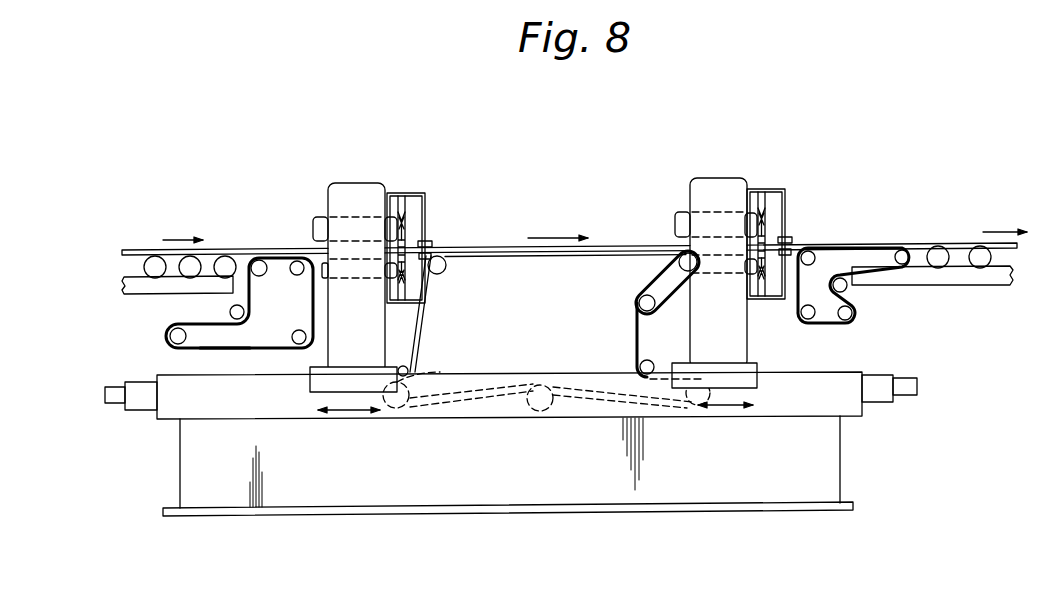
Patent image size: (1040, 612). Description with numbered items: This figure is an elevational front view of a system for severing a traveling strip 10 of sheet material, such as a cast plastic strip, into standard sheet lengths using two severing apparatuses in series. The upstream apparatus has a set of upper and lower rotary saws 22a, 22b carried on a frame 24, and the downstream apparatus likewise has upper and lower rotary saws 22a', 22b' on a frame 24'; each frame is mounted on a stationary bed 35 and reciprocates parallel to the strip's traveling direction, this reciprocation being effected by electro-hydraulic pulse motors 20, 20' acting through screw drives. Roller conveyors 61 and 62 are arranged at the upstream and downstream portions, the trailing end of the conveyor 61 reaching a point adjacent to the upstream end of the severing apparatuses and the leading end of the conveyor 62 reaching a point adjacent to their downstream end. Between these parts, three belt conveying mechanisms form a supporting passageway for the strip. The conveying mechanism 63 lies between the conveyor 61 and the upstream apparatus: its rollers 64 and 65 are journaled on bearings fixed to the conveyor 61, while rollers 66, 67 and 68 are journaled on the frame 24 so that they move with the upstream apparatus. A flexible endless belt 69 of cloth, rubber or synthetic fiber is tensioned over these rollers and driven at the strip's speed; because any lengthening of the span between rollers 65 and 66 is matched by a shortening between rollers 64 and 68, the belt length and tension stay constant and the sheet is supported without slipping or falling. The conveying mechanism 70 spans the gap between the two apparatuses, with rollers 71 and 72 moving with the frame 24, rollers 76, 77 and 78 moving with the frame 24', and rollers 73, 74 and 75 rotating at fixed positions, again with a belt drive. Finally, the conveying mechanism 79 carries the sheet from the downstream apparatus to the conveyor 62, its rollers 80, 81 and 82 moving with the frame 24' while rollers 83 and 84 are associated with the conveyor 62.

The strip 10 is at (133, 250).
The electro-hydraulic pulse motor 20 is at (483, 411).
The electro-hydraulic pulse motor 20' is at (889, 407).
The upper rotary saw 22a is at (434, 210).
The lower rotary saw 22b is at (442, 250).
The upper rotary saw 22a' is at (795, 209).
The lower rotary saw 22b' is at (805, 241).
The frame 24 is at (349, 259).
The frame 24' is at (718, 253).
The stationary bed 35 is at (507, 497).
The roller conveyor 61 is at (143, 292).
The roller conveyor 62 is at (997, 281).
The conveying mechanism 63 is at (255, 351).
The roller 64 is at (258, 276).
The roller 65 is at (230, 312).
The roller 66 is at (178, 328).
The roller 67 is at (300, 343).
The roller 68 is at (294, 276).
The flexible endless belt 69 is at (222, 345).
The conveying mechanism 70 is at (470, 313).
The roller 71 is at (447, 266).
The roller 72 is at (405, 368).
The roller 73 is at (440, 372).
The roller 74 is at (545, 412).
The roller 75 is at (695, 404).
The roller 76 is at (651, 364).
The roller 77 is at (656, 304).
The roller 78 is at (678, 263).
The conveying mechanism 79 is at (830, 325).
The roller 80 is at (814, 256).
The roller 81 is at (811, 306).
The roller 82 is at (852, 315).
The roller 83 is at (848, 291).
The roller 84 is at (908, 248).